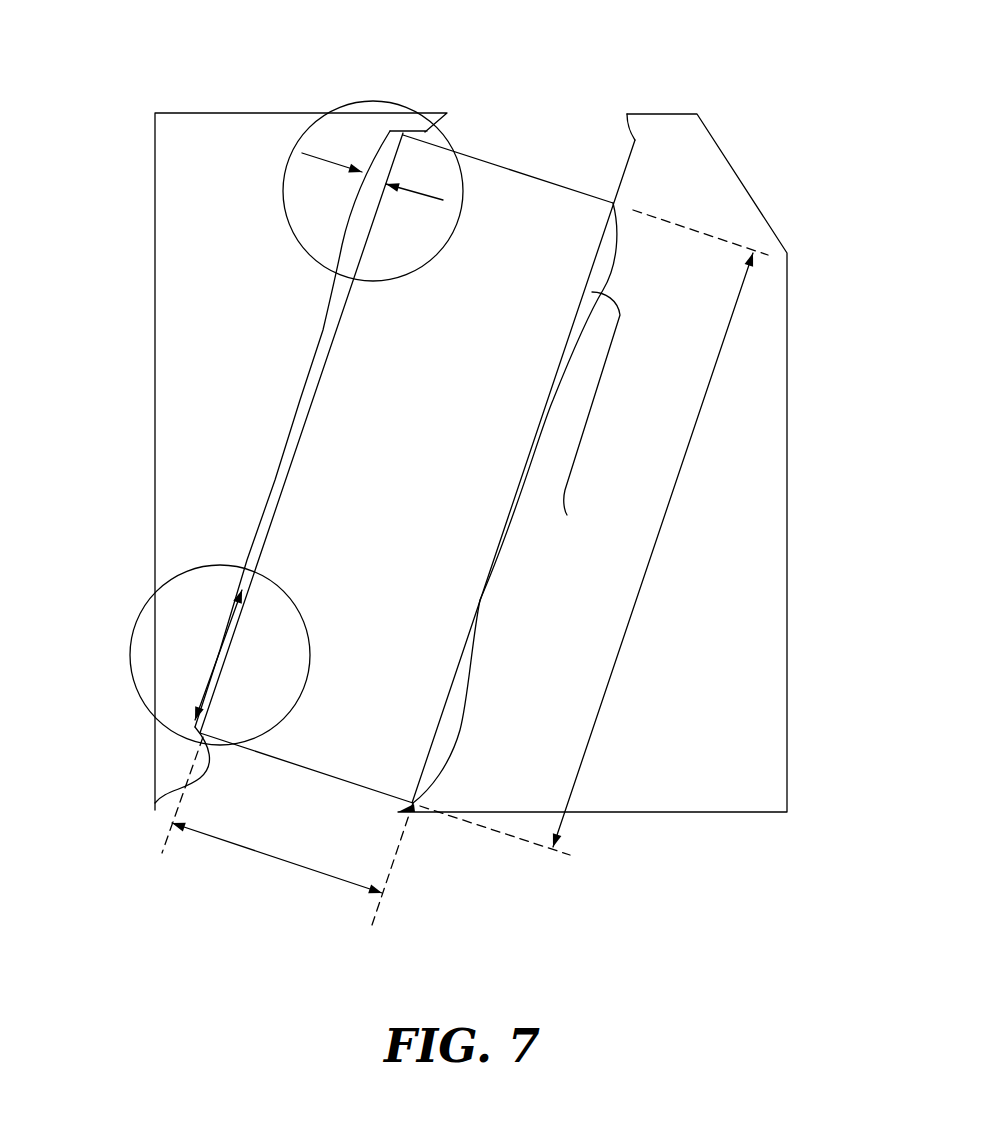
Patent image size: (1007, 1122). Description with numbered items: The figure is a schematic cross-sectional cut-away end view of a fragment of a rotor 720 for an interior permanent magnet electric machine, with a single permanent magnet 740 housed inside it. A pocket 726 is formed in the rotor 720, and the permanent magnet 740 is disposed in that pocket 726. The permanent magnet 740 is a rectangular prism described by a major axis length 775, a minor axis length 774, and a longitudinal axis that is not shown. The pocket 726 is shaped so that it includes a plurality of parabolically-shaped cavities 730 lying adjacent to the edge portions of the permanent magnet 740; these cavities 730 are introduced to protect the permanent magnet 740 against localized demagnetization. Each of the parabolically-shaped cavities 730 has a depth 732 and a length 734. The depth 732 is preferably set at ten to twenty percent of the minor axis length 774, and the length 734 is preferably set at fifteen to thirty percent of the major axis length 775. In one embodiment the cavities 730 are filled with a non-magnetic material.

The rotor 720 is at (153, 243).
The pocket 726 is at (303, 410).
The parabolically-shaped cavities 730 is at (358, 218).
The depth 732 is at (329, 154).
The length 734 is at (217, 647).
The permanent magnet 740 is at (347, 498).
The minor axis length 774 is at (266, 855).
The major axis length 775 is at (690, 447).